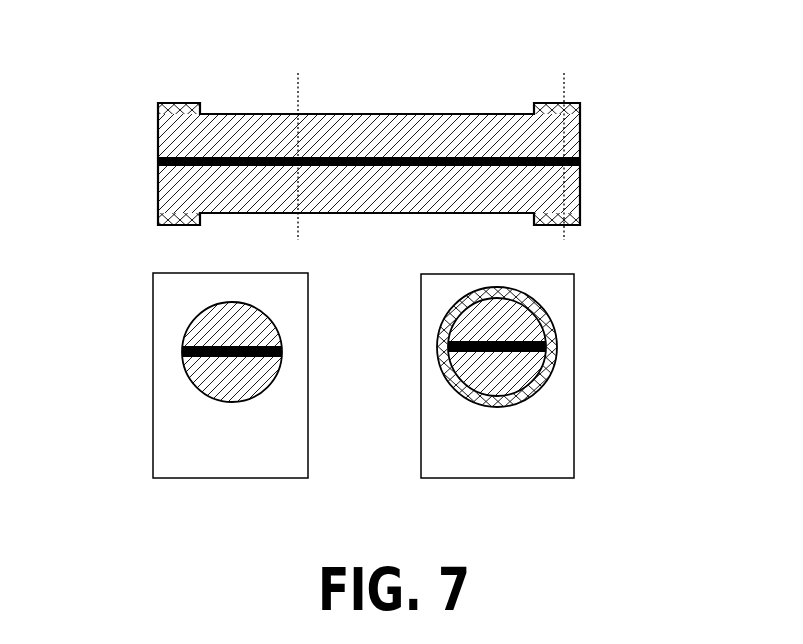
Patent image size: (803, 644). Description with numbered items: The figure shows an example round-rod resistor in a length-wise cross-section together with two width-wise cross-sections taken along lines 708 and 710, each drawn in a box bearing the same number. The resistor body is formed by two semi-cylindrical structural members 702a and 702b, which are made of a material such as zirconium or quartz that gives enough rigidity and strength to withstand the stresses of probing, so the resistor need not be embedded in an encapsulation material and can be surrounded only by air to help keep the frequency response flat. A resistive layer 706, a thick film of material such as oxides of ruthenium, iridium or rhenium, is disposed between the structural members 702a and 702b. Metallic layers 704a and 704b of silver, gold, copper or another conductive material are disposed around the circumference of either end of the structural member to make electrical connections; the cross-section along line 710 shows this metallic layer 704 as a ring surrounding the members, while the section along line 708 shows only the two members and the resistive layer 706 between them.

The semi-cylindrical structural member 702a is at (390, 135).
The semi-cylindrical structural member 702b is at (393, 193).
The metallic layer 704 is at (522, 403).
The metallic layer 704a is at (580, 102).
The metallic layer 704b is at (158, 103).
The resistive layer 706 is at (443, 157).
The cross-section line 708 is at (238, 263).
The cross-section line 710 is at (504, 263).